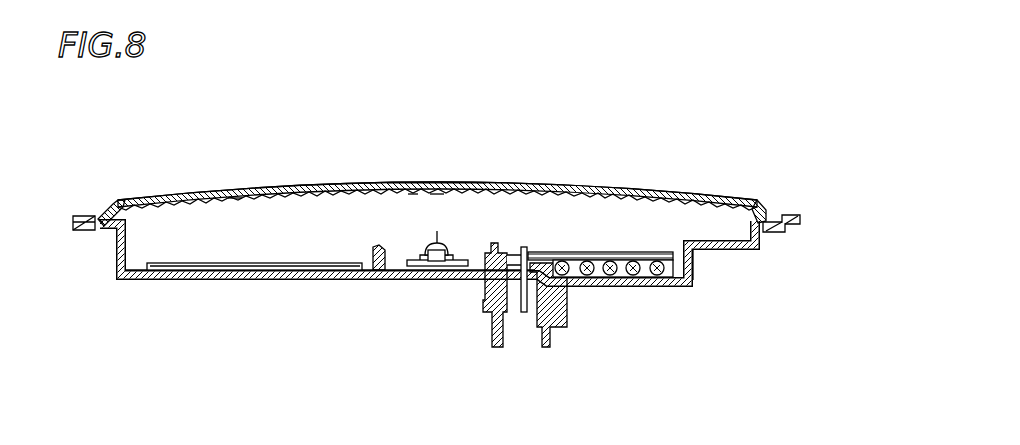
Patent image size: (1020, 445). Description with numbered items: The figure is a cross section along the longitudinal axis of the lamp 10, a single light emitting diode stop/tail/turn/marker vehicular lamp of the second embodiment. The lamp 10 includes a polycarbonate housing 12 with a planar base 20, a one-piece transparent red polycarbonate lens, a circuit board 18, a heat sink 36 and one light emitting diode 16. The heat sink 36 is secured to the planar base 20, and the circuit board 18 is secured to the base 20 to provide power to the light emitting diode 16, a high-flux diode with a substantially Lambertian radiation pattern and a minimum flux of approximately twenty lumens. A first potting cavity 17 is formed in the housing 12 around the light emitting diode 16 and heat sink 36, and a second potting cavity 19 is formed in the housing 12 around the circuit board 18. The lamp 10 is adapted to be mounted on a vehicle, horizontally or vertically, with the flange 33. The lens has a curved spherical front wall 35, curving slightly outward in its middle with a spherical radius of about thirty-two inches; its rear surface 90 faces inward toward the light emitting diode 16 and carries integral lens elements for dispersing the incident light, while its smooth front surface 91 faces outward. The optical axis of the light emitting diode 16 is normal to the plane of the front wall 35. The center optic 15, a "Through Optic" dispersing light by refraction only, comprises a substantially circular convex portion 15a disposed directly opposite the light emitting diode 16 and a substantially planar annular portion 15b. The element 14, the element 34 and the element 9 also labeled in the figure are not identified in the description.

The connector pin 9 is at (527, 343).
The lamp 10 is at (725, 175).
The housing 12 is at (116, 280).
The lid 14 is at (353, 183).
The center optic 15 is at (488, 180).
The convex portion 15a is at (439, 195).
The annular portion 15b is at (413, 195).
The light emitting diode 16 is at (433, 279).
The first potting cavity 17 is at (472, 248).
The circuit board 18 is at (693, 262).
The second potting cavity 19 is at (663, 284).
The planar base 20 is at (245, 280).
The flange 33 is at (85, 208).
The right flange 34 is at (759, 200).
The front wall 35 is at (309, 181).
The heat sink 36 is at (281, 262).
The rear surface 90 is at (235, 200).
The front surface 91 is at (184, 188).